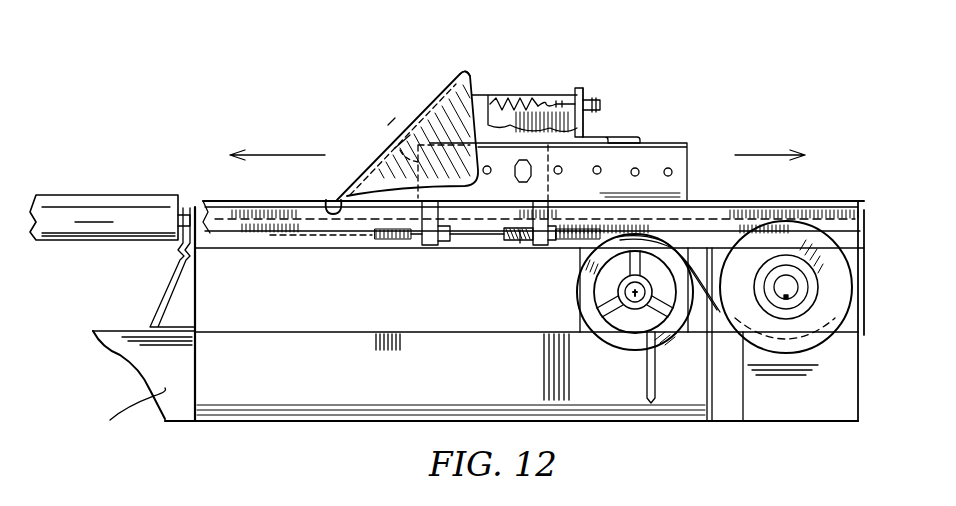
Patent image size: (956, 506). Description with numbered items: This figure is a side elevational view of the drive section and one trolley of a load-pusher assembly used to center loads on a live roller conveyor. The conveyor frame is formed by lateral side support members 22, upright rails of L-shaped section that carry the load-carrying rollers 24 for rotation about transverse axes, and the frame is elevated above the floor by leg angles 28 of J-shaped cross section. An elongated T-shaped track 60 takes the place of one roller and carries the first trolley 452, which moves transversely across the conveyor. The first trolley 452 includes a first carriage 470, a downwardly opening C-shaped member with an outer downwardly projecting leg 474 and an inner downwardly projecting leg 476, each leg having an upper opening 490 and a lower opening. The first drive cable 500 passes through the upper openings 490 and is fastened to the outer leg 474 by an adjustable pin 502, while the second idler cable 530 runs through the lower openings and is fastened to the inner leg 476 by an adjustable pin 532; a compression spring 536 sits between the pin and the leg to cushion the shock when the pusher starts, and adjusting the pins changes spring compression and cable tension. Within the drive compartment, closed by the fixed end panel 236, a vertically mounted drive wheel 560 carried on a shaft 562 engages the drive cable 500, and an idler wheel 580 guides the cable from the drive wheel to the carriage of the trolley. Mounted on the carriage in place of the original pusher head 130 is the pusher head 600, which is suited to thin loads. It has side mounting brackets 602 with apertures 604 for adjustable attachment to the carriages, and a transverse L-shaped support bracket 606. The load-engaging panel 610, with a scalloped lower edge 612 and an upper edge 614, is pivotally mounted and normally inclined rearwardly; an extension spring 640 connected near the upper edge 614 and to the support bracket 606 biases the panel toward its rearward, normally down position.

The lateral side support member 22 is at (192, 283).
The load-carrying roller 24 is at (128, 208).
The leg angle 28 is at (165, 388).
The track 60 is at (294, 196).
The pusher head 130 is at (394, 148).
The fixed end panel 236 is at (862, 255).
The first trolley 452 is at (391, 113).
The first carriage 470 is at (494, 232).
The outer downwardly projecting leg 474 is at (541, 246).
The inner downwardly projecting leg 476 is at (433, 247).
The upper opening 490 is at (440, 197).
The first drive cable 500 is at (243, 212).
The adjustable pin 502 is at (481, 221).
The second idler cable 530 is at (313, 238).
The adjustable pin 532 is at (447, 241).
The compression spring 536 is at (518, 243).
The drive wheel 560 is at (798, 232).
The shaft 562 is at (790, 286).
The idler wheel 580 is at (622, 342).
The pusher head 600 is at (600, 77).
The side mounting bracket 602 is at (680, 158).
The aperture 604 is at (630, 137).
The L-shaped support bracket 606 is at (598, 138).
The load-engaging panel 610 is at (424, 99).
The scalloped lower edge 612 is at (333, 196).
The upper edge 614 is at (468, 71).
The extension spring 640 is at (500, 97).